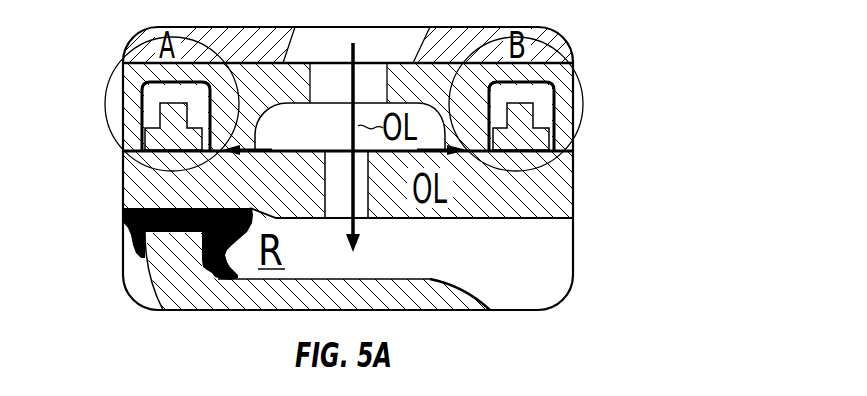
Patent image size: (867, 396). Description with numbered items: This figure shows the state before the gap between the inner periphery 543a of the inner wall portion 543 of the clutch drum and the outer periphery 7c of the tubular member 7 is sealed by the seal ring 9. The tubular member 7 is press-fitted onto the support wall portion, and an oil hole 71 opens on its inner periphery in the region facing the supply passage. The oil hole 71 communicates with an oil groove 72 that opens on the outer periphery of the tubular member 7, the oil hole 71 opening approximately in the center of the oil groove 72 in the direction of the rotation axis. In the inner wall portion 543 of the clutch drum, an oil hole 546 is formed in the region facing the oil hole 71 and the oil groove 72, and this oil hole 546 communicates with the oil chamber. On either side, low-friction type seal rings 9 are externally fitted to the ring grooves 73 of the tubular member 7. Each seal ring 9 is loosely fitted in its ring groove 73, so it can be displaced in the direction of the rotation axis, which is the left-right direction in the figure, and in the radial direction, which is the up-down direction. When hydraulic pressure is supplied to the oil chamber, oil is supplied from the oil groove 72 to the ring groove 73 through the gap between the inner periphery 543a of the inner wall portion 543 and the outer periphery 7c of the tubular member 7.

The tubular member 7 is at (577, 73).
The seal ring 9 is at (141, 131).
The ring groove 73 is at (255, 107).
The outer periphery 7c is at (480, 106).
The oil hole 71 is at (345, 99).
The oil groove 72 is at (322, 145).
The inner wall portion 543 is at (137, 186).
The oil hole 546 is at (329, 194).
The inner periphery 543a is at (508, 160).